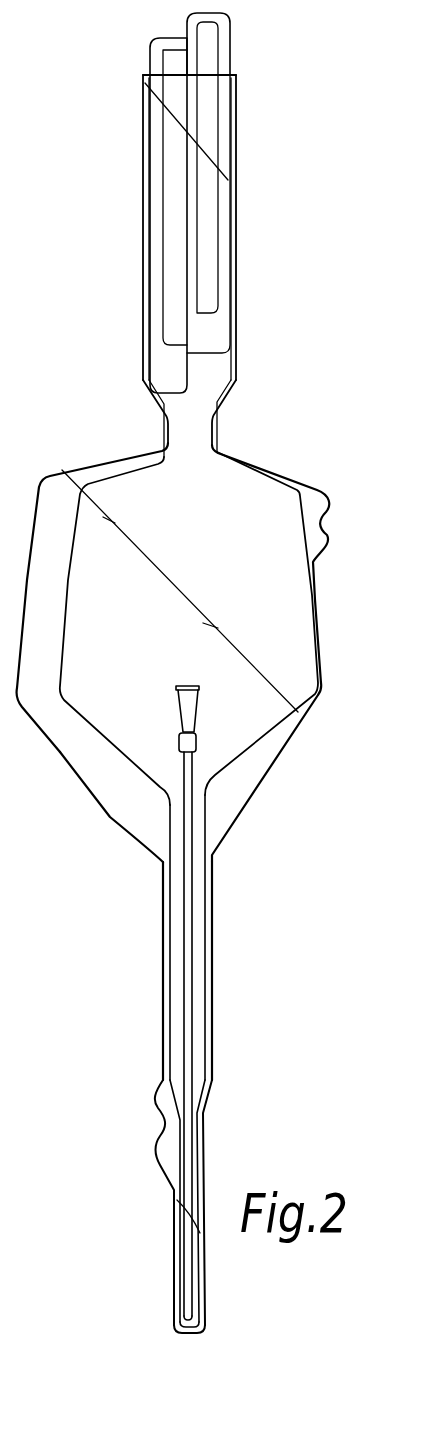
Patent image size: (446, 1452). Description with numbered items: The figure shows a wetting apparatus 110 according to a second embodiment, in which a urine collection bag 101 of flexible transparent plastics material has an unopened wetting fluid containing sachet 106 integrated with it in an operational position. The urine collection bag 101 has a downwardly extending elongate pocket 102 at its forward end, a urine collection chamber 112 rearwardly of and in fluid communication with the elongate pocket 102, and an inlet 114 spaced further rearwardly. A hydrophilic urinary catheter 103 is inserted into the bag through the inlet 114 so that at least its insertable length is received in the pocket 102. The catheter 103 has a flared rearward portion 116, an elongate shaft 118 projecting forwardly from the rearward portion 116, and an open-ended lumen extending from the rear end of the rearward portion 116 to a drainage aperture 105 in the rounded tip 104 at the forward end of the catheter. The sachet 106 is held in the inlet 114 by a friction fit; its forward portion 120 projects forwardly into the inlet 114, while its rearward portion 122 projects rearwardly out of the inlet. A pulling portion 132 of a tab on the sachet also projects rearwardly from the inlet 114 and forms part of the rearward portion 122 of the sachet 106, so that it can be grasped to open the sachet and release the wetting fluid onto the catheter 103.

The urine collection bag 101 is at (122, 795).
The elongate pocket 102 is at (212, 1025).
The hydrophilic urinary catheter 103 is at (192, 942).
The rounded tip 104 is at (190, 1337).
The drainage aperture 105 is at (188, 1318).
The wetting fluid containing sachet 106 is at (208, 287).
The wetting apparatus 110 is at (103, 349).
The urine collection chamber 112 is at (270, 612).
The inlet 114 is at (237, 227).
The flared rearward portion 116 is at (192, 718).
The elongate shaft 118 is at (183, 872).
The forward portion 120 is at (167, 179).
The rearward portion 122 is at (167, 62).
The pulling portion 132 is at (227, 49).